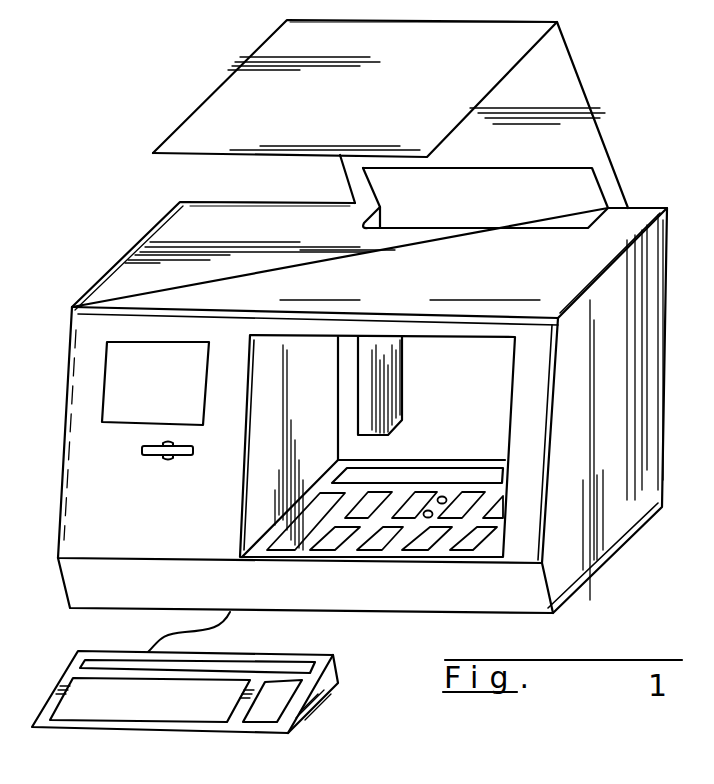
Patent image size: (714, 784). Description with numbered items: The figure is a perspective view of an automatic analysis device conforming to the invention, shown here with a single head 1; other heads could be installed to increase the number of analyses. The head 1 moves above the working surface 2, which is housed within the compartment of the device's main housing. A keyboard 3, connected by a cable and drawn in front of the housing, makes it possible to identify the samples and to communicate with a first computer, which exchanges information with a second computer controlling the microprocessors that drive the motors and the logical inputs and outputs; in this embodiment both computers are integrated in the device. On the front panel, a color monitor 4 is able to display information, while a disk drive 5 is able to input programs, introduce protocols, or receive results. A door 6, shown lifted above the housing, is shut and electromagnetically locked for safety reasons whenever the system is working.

The head 1 is at (397, 370).
The working surface 2 is at (307, 492).
The keyboard 3 is at (167, 703).
The color monitor 4 is at (113, 426).
The disk drive 5 is at (188, 457).
The door 6 is at (207, 118).